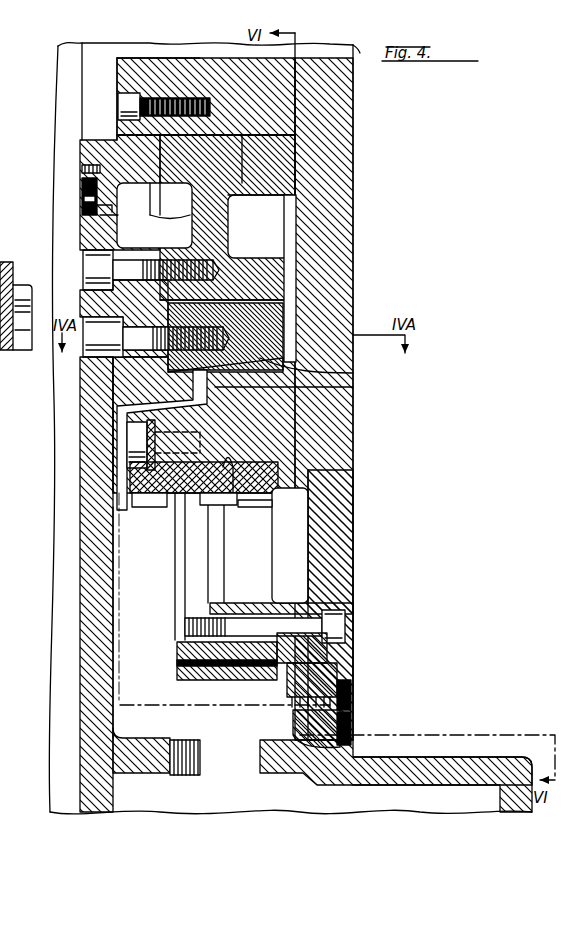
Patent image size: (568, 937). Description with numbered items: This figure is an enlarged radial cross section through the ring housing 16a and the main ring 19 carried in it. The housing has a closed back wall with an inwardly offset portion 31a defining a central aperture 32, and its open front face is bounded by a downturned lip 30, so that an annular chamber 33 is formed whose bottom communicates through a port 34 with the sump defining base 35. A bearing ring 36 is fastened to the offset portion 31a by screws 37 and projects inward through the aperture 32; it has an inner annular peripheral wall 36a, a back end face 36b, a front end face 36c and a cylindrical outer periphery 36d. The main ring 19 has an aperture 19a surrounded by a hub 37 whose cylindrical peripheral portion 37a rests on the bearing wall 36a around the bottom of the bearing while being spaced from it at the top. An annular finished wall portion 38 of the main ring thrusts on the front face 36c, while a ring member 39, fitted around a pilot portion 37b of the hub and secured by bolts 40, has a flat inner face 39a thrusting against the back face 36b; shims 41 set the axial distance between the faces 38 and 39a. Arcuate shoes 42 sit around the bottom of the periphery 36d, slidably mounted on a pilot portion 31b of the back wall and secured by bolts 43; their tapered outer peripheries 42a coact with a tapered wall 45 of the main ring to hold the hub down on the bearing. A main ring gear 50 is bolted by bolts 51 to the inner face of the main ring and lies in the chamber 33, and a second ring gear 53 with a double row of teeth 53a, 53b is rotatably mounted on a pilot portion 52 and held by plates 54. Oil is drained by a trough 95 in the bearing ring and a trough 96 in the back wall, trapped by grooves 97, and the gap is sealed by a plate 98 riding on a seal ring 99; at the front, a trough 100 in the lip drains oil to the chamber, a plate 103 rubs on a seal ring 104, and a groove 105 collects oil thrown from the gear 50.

The ring housing 16a is at (80, 499).
The main ring 19 is at (335, 437).
The aperture 19a is at (360, 53).
The downturned lip 30 is at (293, 717).
The inwardly offset portion 31a is at (110, 382).
The pilot portion 31b is at (125, 417).
The central aperture 32 is at (83, 192).
The annular chamber 33 is at (145, 566).
The port 34 is at (223, 717).
The sump defining base 35 is at (407, 767).
The bearing ring 36 is at (227, 217).
The inner annular peripheral wall 36a is at (262, 198).
The back end face 36b is at (169, 212).
The front end face 36c is at (292, 182).
The cylindrical outer periphery 36d is at (283, 318).
The hub 37 is at (223, 67).
The cylindrical peripheral portion 37a is at (260, 135).
The pilot portion 37b is at (123, 71).
The annular finished wall portion 38 is at (295, 157).
The ring member 39 is at (124, 144).
The flat inner face 39a is at (154, 215).
The bolts 40 is at (122, 102).
The shims 41 is at (165, 68).
The arcuate shoes 42 is at (305, 308).
The tapered outer peripheries 42a is at (353, 387).
The bolts 43 is at (80, 358).
The tapered wall 45 is at (353, 373).
The main ring gear 50 is at (187, 661).
The bolts 51 is at (268, 623).
The pilot portion 52 is at (224, 493).
The second ring gear 53 is at (190, 527).
The teeth 53a is at (143, 507).
The teeth 53b is at (275, 500).
The plates 54 is at (148, 472).
The trough 95 is at (170, 206).
The trough 96 is at (110, 214).
The grooves 97 is at (97, 211).
The plate 98 is at (82, 179).
The seal ring 99 is at (87, 203).
The trough 100 is at (343, 743).
The plate 103 is at (347, 697).
The seal ring 104 is at (347, 720).
The groove 105 is at (310, 672).